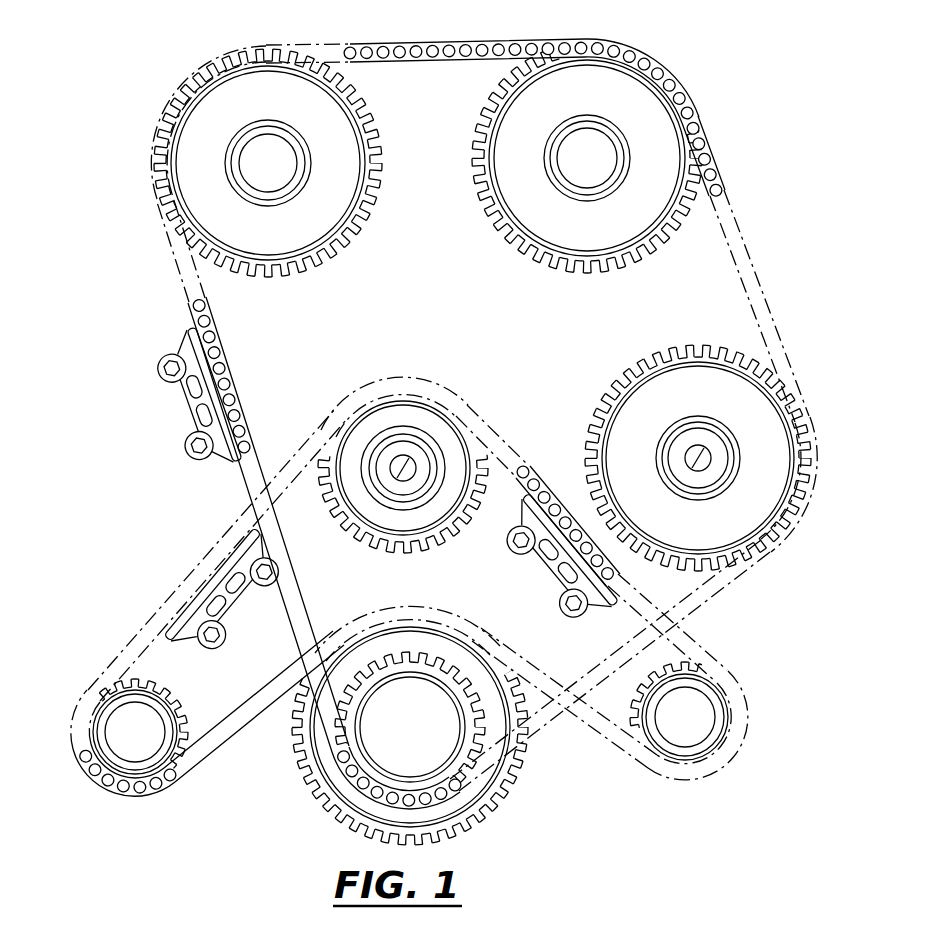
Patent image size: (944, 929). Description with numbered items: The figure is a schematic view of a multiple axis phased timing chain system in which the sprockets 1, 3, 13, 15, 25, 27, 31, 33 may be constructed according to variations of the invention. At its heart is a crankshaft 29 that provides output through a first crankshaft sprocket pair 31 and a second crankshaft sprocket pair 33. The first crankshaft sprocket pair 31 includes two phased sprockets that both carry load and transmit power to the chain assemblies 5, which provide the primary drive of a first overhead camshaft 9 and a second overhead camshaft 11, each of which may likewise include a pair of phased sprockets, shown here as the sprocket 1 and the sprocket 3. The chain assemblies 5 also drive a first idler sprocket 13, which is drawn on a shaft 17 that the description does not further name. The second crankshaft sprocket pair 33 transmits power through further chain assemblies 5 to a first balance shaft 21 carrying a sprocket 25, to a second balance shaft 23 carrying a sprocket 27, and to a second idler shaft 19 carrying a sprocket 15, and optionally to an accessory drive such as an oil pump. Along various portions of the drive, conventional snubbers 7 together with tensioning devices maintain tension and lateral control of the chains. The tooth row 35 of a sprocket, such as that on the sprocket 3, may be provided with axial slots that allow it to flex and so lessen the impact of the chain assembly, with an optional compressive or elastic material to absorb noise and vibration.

The sprocket 1 is at (242, 100).
The sprocket 3 is at (657, 110).
The chain assemblies 5 is at (630, 40).
The snubbers 7 is at (195, 403).
The first overhead camshaft 9 is at (252, 172).
The second overhead camshaft 11 is at (592, 162).
The first idler sprocket 13 is at (742, 508).
The sprocket 15 is at (346, 500).
The shaft 17 is at (707, 460).
The second idler shaft 19 is at (398, 466).
The first balance shaft 21 is at (118, 728).
The second balance shaft 23 is at (692, 716).
The sprocket 25 is at (124, 686).
The sprocket 27 is at (630, 748).
The crankshaft 29 is at (388, 724).
The first crankshaft sprocket pair 31 is at (470, 735).
The second crankshaft sprocket pair 33 is at (346, 812).
The tooth row 35 is at (488, 90).